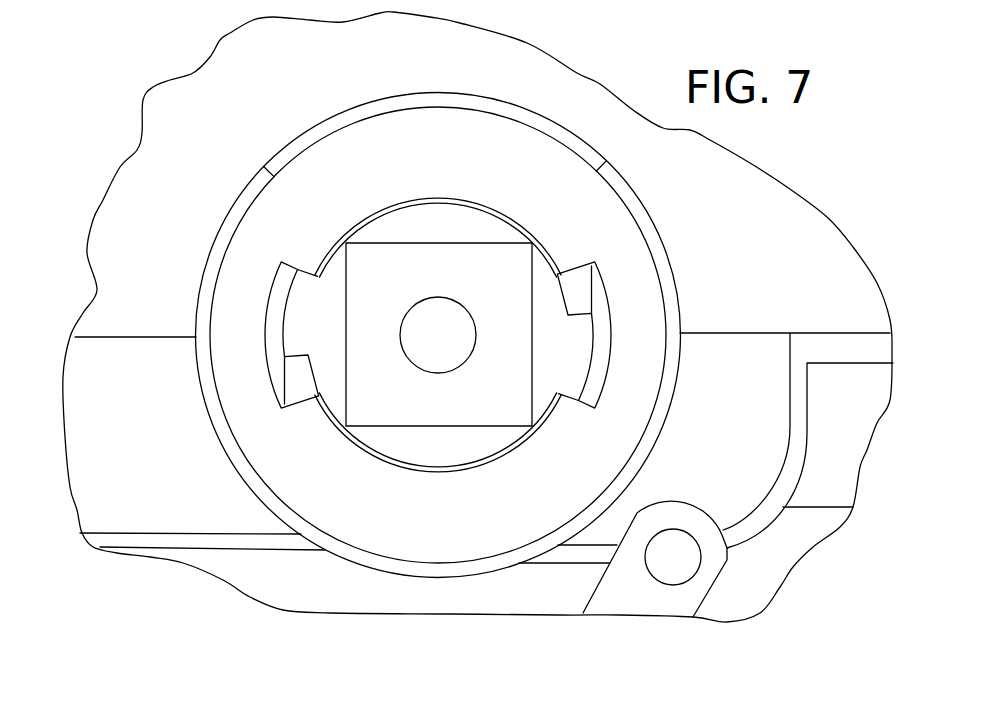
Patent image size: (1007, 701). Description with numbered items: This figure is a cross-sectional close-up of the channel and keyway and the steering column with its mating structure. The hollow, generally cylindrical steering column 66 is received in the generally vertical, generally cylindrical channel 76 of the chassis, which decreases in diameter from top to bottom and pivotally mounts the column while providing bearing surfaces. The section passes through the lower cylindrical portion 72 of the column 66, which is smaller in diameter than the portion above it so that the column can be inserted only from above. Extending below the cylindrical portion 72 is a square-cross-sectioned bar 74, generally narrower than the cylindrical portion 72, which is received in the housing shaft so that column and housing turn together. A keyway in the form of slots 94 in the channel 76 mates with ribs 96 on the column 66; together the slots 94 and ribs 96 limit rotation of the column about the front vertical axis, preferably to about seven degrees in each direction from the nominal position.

The steering column 66 is at (502, 452).
The cylindrical portion 72 is at (393, 444).
The square-cross-sectioned bar 74 is at (480, 412).
The channel 76 is at (450, 472).
The slots 94 is at (283, 395).
The ribs 96 is at (298, 318).